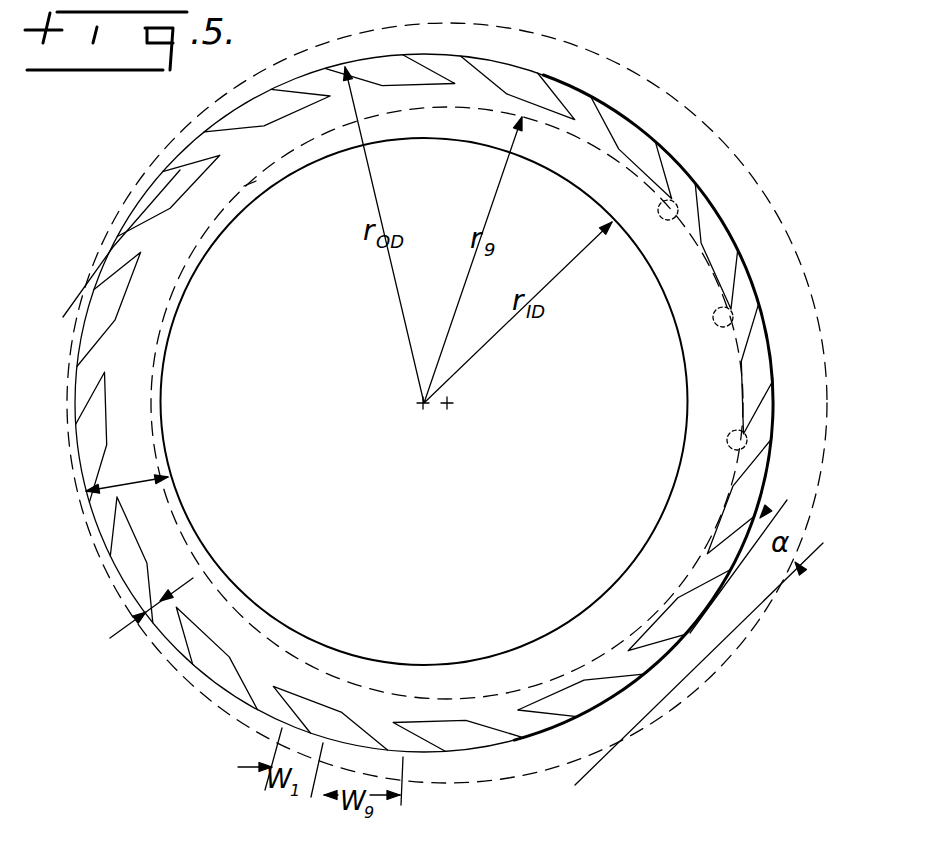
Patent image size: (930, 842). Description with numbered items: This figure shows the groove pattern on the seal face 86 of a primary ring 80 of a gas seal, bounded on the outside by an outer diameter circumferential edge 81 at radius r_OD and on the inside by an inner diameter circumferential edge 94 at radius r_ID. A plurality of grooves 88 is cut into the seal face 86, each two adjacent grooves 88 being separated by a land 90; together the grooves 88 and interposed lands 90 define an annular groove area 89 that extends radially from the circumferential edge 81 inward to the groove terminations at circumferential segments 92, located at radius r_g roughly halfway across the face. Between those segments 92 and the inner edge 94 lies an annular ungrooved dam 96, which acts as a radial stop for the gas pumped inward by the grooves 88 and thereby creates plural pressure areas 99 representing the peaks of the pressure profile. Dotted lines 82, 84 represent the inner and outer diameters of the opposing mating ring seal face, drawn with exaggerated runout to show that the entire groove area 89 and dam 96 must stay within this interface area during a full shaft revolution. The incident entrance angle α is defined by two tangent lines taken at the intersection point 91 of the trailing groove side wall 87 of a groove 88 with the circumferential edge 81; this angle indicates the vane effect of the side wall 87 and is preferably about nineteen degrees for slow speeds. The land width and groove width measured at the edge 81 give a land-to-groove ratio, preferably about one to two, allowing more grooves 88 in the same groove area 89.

The primary ring 80 is at (175, 156).
The outer diameter circumferential edge 81 is at (218, 698).
The dotted line of mating ring seal face inner diameter 82 is at (250, 185).
The dotted line of mating ring seal face outer diameter 84 is at (750, 162).
The seal face 86 is at (135, 482).
The trailing groove side wall 87 is at (523, 713).
The grooves 88 is at (589, 711).
The groove area 89 is at (157, 605).
The land 90 is at (80, 403).
The intersection point 91 is at (697, 623).
The circumferential segments 92 is at (120, 297).
The inner diameter circumferential edge 94 is at (172, 336).
The dam 96 is at (187, 522).
The pressure areas 99 is at (726, 442).